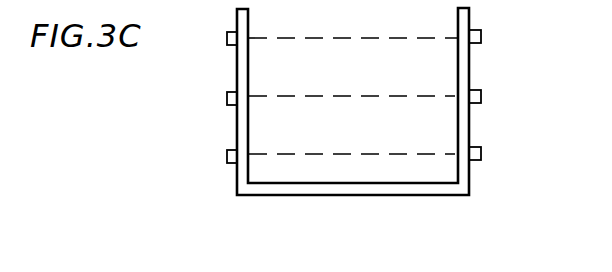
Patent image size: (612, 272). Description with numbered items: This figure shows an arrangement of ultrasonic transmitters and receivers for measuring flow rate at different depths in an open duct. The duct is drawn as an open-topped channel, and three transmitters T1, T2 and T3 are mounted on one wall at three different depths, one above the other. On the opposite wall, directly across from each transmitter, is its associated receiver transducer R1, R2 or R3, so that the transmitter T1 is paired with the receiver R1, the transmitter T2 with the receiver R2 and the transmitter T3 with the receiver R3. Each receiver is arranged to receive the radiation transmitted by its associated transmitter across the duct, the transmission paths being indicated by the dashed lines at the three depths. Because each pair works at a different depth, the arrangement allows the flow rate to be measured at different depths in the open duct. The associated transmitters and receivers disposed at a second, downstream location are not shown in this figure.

The ultrasonic transmitter T1 is at (212, 40).
The ultrasonic transmitter T2 is at (212, 100).
The ultrasonic transmitter T3 is at (212, 158).
The receiver transducer R1 is at (493, 38).
The receiver transducer R2 is at (493, 98).
The receiver transducer R3 is at (493, 155).